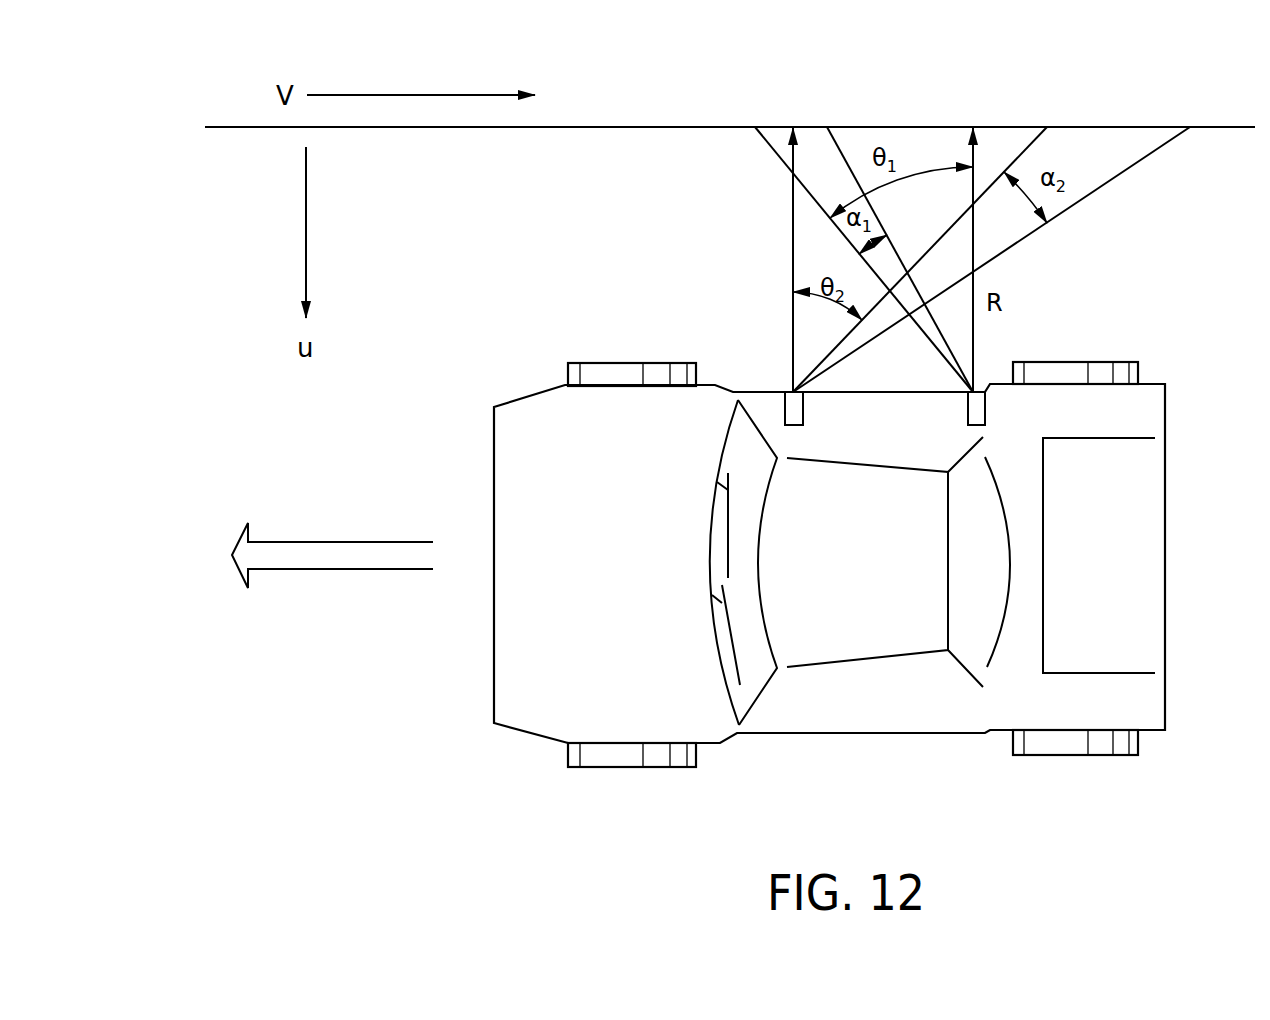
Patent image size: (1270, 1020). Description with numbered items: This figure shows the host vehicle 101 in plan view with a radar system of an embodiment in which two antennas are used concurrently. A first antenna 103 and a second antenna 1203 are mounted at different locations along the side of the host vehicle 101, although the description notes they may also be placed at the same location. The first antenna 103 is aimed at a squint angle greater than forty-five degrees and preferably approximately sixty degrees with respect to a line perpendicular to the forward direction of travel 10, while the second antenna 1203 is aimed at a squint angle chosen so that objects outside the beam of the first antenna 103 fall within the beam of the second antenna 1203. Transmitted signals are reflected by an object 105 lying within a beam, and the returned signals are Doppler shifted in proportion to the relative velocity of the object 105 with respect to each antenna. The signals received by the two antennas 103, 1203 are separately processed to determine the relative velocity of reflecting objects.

The object 105 is at (1100, 126).
The antenna 103 is at (981, 405).
The second antenna 1203 is at (797, 405).
The host vehicle 101 is at (1157, 687).
The forward direction of travel 10 is at (332, 541).